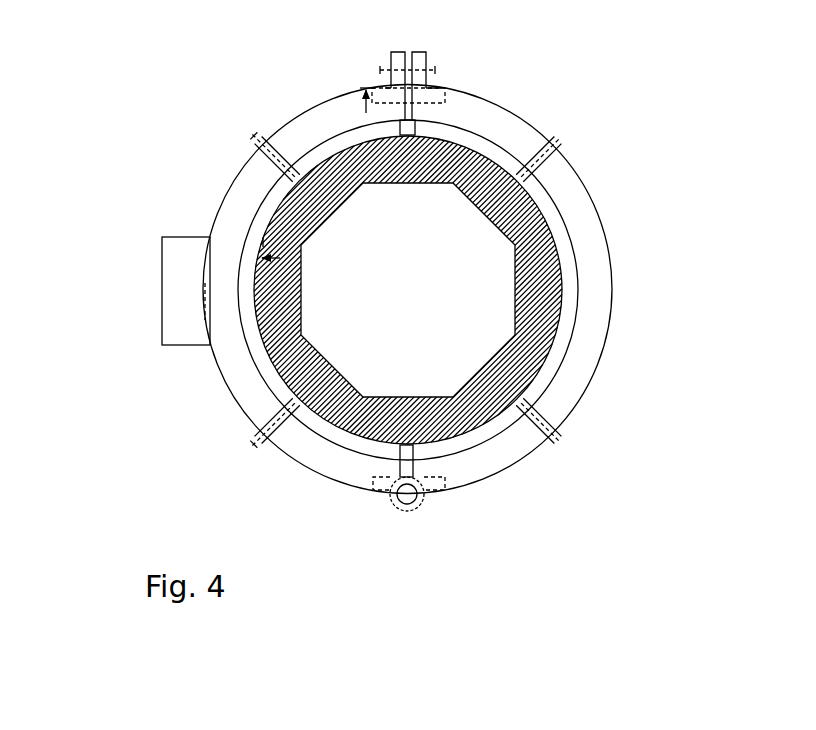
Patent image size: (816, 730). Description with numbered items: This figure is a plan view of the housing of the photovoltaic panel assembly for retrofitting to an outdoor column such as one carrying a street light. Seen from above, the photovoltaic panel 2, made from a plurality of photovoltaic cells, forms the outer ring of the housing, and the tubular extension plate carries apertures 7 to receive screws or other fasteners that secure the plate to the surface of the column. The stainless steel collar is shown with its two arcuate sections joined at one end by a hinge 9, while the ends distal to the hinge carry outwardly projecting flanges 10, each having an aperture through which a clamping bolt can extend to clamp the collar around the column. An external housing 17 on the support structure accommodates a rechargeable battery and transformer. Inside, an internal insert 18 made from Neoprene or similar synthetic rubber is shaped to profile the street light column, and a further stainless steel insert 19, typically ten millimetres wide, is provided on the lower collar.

The photovoltaic panel 2 is at (597, 243).
The apertures 7 is at (555, 433).
The hinge 9 is at (413, 502).
The outwardly projecting flanges 10 is at (426, 53).
The external housing 17 is at (177, 332).
The internal insert 18 is at (302, 340).
The stainless steel insert 19 is at (265, 223).